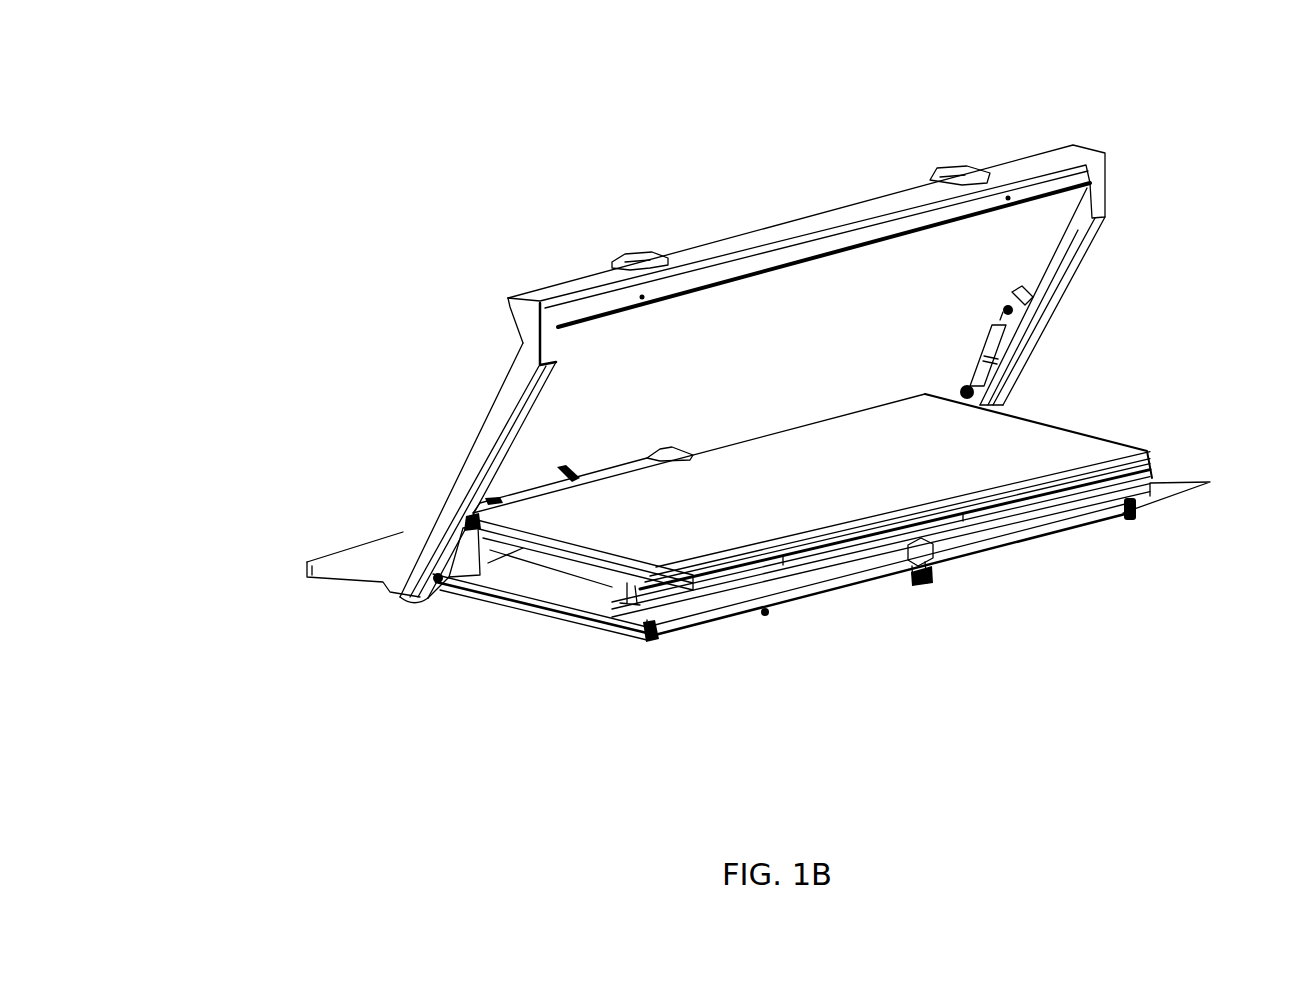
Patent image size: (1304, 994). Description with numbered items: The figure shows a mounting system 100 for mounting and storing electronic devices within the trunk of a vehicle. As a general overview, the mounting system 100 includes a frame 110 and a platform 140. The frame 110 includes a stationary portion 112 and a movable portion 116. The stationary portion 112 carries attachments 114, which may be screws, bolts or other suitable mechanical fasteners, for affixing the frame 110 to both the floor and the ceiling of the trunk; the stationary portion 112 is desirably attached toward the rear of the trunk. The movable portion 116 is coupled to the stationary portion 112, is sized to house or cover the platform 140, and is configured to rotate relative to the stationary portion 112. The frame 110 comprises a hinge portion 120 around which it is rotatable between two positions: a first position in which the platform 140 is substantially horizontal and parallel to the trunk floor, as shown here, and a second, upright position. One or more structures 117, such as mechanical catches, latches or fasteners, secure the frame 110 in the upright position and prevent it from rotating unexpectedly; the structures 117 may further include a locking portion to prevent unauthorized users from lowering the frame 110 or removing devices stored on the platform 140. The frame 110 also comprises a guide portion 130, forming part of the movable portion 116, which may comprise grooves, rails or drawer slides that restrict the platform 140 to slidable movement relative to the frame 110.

The mounting system 100 is at (282, 75).
The frame 110 is at (443, 448).
The stationary portion 112 is at (450, 490).
The attachments 114 is at (610, 256).
The movable portion 116 is at (648, 645).
The structures 117 is at (924, 588).
The hinge portion 120 is at (433, 583).
The guide portion 130 is at (524, 548).
The platform 140 is at (1110, 427).